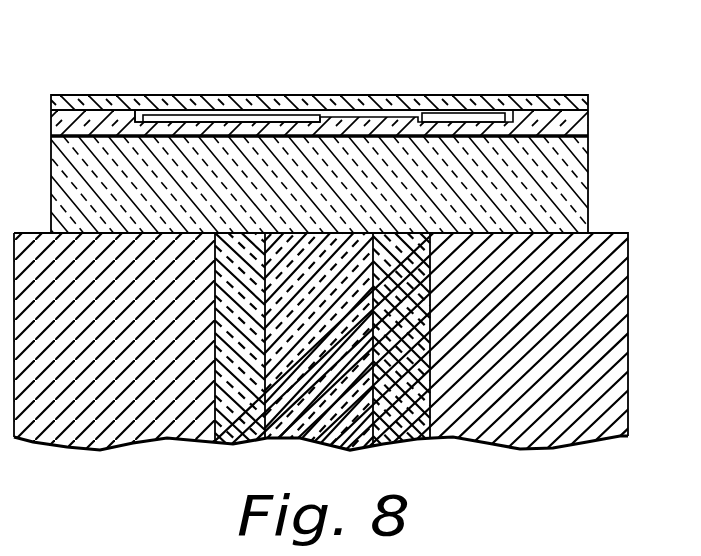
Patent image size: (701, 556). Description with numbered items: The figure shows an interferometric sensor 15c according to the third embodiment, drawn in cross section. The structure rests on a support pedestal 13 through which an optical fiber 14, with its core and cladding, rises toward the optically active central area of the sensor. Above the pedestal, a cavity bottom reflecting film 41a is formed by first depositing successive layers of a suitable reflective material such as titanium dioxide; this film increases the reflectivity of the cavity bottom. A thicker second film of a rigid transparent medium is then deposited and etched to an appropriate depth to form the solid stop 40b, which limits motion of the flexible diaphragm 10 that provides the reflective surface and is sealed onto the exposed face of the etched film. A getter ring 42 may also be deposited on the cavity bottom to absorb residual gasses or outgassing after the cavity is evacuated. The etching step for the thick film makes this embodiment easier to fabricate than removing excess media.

The diaphragm 10 is at (447, 95).
The support pedestal 13 is at (607, 326).
The optical fiber 14 is at (422, 273).
The interferometric sensor 15c is at (334, 122).
The solid stop 40b is at (290, 122).
The cavity bottom reflecting film 41a is at (565, 134).
The getter ring 42 is at (182, 119).